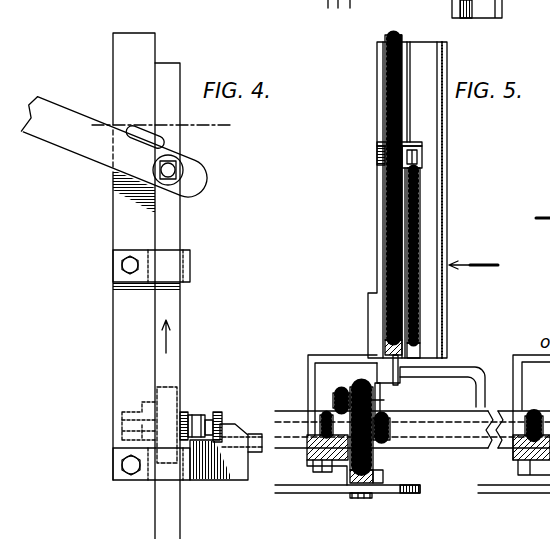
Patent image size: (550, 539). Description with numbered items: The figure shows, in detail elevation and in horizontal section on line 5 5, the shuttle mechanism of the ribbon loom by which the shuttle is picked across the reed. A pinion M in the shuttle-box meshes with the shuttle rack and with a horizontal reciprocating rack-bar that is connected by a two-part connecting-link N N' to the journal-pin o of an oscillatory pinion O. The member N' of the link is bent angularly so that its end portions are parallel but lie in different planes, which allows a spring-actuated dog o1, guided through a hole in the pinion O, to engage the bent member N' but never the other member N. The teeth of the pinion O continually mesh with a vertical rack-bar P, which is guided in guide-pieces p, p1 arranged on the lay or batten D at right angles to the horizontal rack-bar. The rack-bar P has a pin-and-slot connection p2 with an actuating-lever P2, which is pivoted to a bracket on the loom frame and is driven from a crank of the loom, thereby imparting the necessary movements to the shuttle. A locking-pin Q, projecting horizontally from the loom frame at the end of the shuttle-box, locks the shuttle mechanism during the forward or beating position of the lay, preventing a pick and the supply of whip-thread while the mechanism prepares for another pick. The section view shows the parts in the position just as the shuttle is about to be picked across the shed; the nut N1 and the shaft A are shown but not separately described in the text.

In FIG. 4, the batten D is at (117, 286).
In FIG. 5, the batten D is at (439, 180).
In FIG. 4, the rack-bar P is at (177, 313).
In FIG. 5, the rack-bar P is at (367, 482).
In FIG. 4, the actuating-lever P2 is at (93, 143).
In FIG. 5, the actuating-lever P2 is at (520, 497).
In FIG. 4, the guide-piece p is at (190, 258).
In FIG. 5, the guide-piece p is at (385, 476).
In FIG. 4, the guide-piece p1 is at (163, 470).
In FIG. 4, the pin-and-slot connection p2 is at (188, 177).
In FIG. 4, the section line 5 is at (170, 122).
In FIG. 4, the journal-pin o is at (222, 427).
In FIG. 5, the journal-pin o is at (392, 428).
In FIG. 4, the spring-actuated dog o1 is at (181, 410).
In FIG. 5, the spring-actuated dog o1 is at (385, 403).
In FIG. 4, the connecting-link member N is at (225, 419).
In FIG. 5, the connecting-link member N is at (438, 263).
In FIG. 4, the nut N1 is at (199, 417).
In FIG. 5, the connecting-link member N' is at (469, 360).
In FIG. 4, the locking-pin Q is at (228, 452).
In FIG. 5, the locking-pin Q is at (448, 368).
In FIG. 5, the pinion M is at (393, 55).
In FIG. 5, the oscillatory pinion O is at (352, 388).
In FIG. 5, the shaft A is at (458, 443).